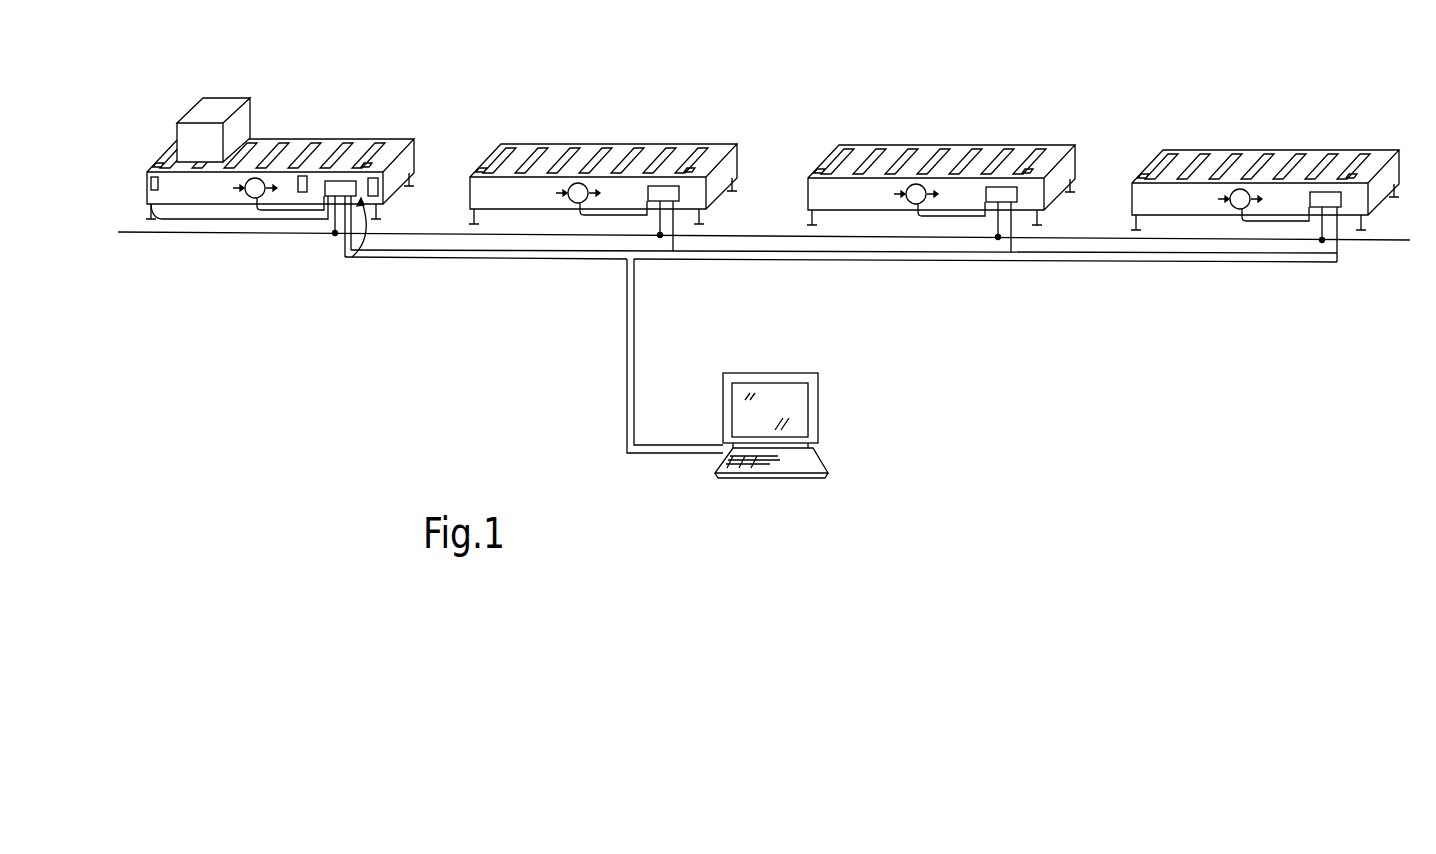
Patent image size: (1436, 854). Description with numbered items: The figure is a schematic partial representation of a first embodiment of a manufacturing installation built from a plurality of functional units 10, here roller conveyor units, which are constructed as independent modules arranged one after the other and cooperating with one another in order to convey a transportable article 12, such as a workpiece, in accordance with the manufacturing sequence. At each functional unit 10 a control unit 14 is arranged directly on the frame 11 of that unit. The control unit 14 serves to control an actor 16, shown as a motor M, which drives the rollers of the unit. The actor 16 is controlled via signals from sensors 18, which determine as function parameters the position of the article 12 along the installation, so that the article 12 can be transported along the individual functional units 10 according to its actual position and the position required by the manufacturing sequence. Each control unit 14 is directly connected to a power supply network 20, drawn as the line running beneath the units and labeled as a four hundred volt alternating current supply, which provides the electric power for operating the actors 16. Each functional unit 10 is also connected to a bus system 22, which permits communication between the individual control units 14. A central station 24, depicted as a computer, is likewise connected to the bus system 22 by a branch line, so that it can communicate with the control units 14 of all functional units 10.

The functional unit 10 is at (763, 186).
The frame 11 is at (150, 200).
The transportable article 12 is at (222, 106).
The control unit 14 is at (346, 258).
The actor 16 is at (272, 186).
The sensor 18 is at (384, 191).
The power supply network 20 is at (727, 236).
The bus system 22 is at (440, 258).
The central station 24 is at (818, 400).